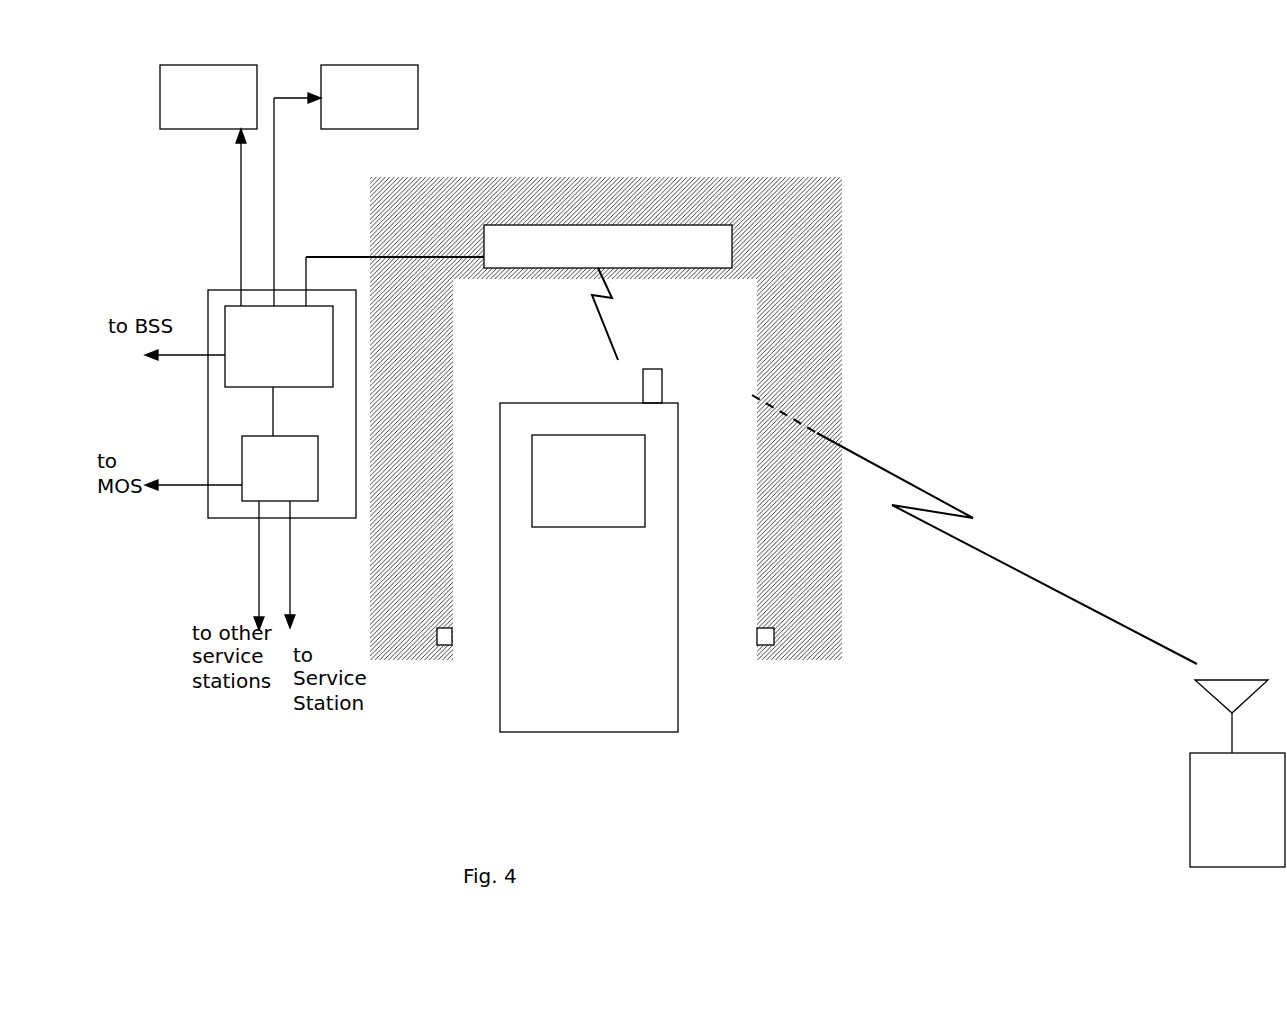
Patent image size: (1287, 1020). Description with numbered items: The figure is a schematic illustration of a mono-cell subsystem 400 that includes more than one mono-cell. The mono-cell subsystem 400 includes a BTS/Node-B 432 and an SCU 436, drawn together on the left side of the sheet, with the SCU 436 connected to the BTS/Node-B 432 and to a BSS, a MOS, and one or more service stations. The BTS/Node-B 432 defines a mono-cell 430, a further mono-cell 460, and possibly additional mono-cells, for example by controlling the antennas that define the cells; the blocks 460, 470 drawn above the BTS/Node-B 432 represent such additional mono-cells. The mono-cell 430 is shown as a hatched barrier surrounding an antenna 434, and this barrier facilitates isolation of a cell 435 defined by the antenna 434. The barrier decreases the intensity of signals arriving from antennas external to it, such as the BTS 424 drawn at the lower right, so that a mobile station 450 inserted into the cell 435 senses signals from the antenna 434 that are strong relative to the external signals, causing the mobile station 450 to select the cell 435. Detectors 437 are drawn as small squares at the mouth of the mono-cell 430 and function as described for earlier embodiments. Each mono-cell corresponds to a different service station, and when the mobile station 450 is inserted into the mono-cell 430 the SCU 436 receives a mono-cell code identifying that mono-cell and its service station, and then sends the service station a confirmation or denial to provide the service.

The mono-cell subsystem 400 is at (830, 100).
The BTS 424 is at (1237, 773).
The mono-cell 430 is at (572, 175).
The BTS/Node-B 432 is at (511, 288).
The antenna 434 is at (608, 246).
The cell 435 is at (655, 314).
The SCU 436 is at (280, 468).
The sensor 437 is at (453, 647).
The mobile station 450 is at (678, 513).
The mono-cell 460 is at (208, 97).
The network element 470 is at (369, 97).